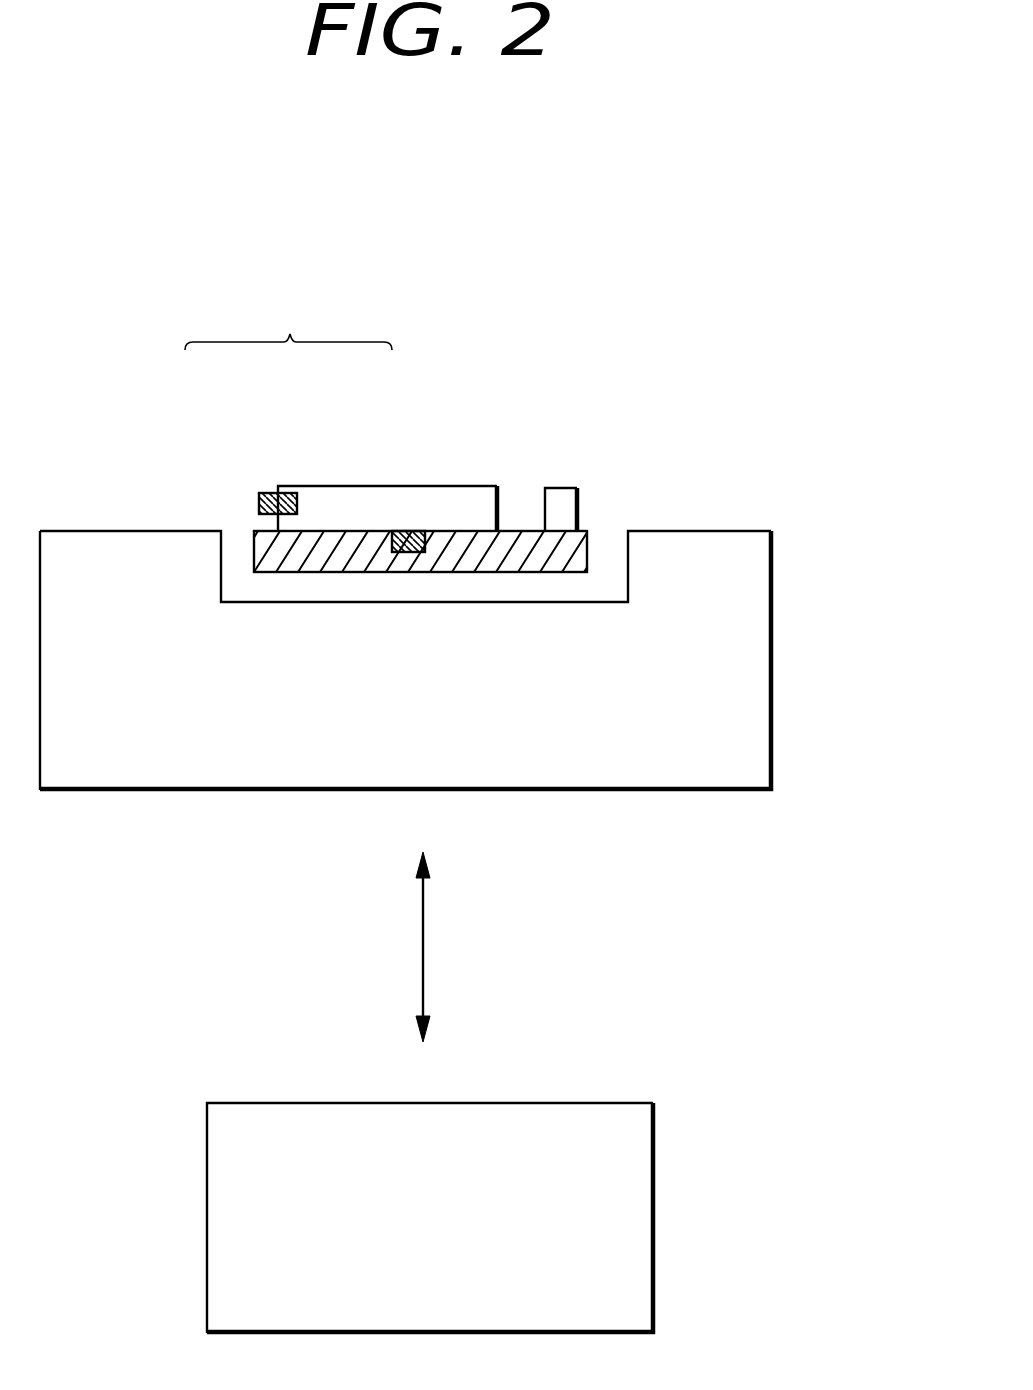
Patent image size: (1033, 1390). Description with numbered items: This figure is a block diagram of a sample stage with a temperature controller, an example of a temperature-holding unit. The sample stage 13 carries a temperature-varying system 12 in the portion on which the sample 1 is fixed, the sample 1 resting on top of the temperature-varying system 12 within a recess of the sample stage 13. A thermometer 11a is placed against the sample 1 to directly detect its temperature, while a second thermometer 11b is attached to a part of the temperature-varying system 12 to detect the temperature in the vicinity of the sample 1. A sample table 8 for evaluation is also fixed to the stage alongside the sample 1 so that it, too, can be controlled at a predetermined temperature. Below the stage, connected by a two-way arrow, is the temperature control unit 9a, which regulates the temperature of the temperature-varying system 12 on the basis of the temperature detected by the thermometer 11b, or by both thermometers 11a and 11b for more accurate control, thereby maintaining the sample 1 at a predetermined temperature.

The sample 1 is at (463, 498).
The sample table for evaluation 8 is at (563, 512).
The temperature control unit 9a is at (642, 1218).
The thermometer 11a is at (273, 493).
The thermometer 11b is at (413, 532).
The temperature-varying system 12 is at (517, 537).
The sample stage 13 is at (749, 683).